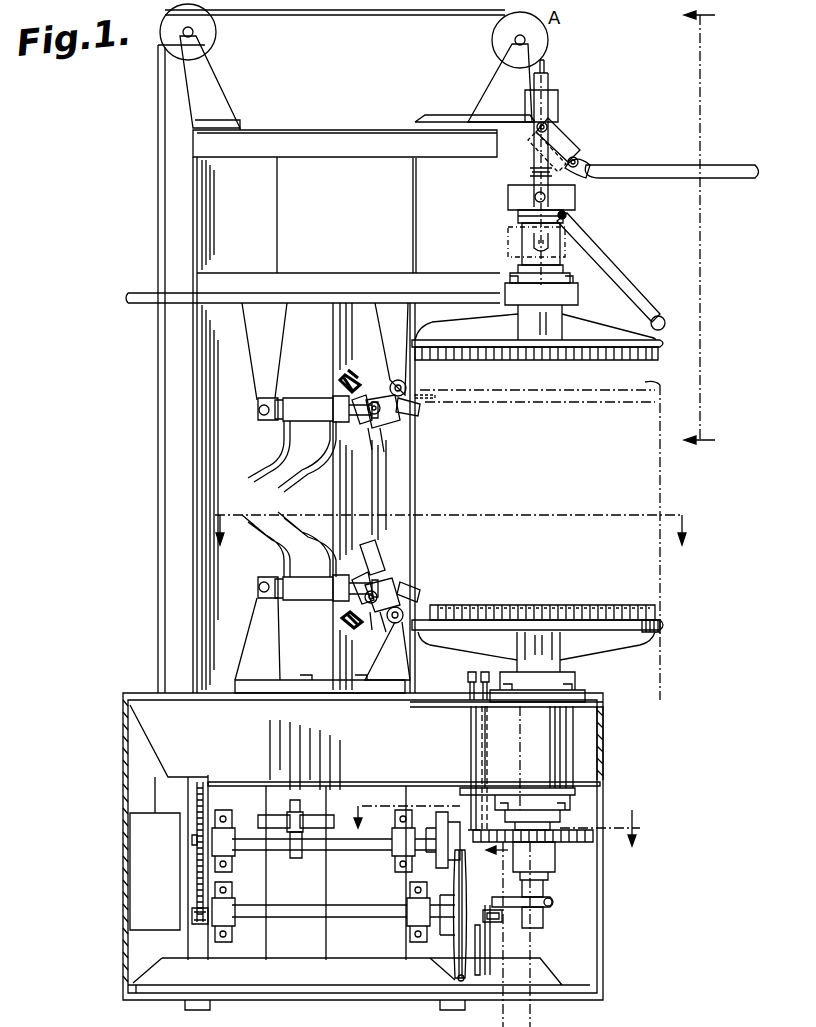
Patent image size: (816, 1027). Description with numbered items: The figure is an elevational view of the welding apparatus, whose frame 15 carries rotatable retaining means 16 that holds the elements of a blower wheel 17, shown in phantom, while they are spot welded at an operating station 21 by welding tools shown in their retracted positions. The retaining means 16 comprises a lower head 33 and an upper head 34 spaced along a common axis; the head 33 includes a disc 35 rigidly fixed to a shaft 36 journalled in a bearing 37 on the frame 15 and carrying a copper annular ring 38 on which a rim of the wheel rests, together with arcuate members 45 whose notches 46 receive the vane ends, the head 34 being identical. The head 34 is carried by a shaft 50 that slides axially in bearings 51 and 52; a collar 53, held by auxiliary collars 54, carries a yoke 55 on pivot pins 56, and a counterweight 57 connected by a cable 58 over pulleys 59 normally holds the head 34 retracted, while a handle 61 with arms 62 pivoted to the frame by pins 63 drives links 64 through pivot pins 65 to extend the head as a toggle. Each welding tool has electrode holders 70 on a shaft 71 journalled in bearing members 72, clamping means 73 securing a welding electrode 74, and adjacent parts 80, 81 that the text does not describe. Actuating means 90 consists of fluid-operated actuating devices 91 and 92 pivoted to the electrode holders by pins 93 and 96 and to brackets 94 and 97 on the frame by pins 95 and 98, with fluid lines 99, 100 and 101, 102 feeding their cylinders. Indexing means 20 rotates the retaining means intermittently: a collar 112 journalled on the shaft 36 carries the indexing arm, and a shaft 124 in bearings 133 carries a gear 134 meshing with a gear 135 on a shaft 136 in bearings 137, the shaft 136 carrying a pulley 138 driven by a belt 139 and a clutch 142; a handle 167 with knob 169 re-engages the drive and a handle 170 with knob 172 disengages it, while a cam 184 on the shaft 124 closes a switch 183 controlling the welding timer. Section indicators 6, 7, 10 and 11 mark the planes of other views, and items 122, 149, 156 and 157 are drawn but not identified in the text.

The section line 6- 6 is at (444, 515).
The section line 7- 7 is at (708, 227).
The section line 10- 10 is at (499, 814).
The section line 11- 11 is at (510, 866).
The frame 15 is at (314, 168).
The retaining means 16 is at (666, 349).
The blower wheel 17 is at (664, 480).
The indexing means 20 is at (572, 826).
The operating station 21 is at (428, 424).
The head 33 is at (620, 652).
The head 34 is at (624, 324).
The disc 35 is at (664, 334).
The shaft 36 is at (556, 742).
The bearing 37 is at (578, 766).
The annular ring 38 is at (667, 355).
The arcuate members 45 is at (622, 614).
The notches 46 is at (600, 608).
The shaft 50 is at (556, 122).
The bearing 51 is at (570, 272).
The bearing 52 is at (570, 166).
The collar 53 is at (578, 196).
The auxiliary collars 54 is at (570, 218).
The yoke 55 is at (566, 152).
The pivot pins 56 is at (532, 204).
The counterweight 57 is at (135, 878).
The cable 58 is at (160, 412).
The pulleys 59 is at (216, 35).
The handle 61 is at (702, 172).
The arms 62 is at (640, 168).
The pivot pins 63 is at (562, 135).
The links 64 is at (548, 166).
The pivot pins 65 is at (582, 168).
The electrode holders 70 is at (385, 428).
The shaft 71 is at (398, 380).
The bearing members 72 is at (405, 315).
The clamping means 73 is at (386, 440).
The welding electrode 74 is at (414, 415).
The gripper finger 80 is at (362, 440).
The finger holder 81 is at (364, 448).
The actuating means 90 is at (290, 546).
The actuating devices 91 is at (303, 603).
The actuating devices 92 is at (310, 398).
The pins 93 is at (388, 585).
The bracket 94 is at (270, 655).
The pins 95 is at (255, 590).
The pins 96 is at (420, 398).
The bracket 97 is at (260, 372).
The pins 98 is at (257, 410).
The fluid line 99 is at (264, 537).
The fluid line 100 is at (325, 555).
The fluid line 101 is at (260, 470).
The fluid line 102 is at (330, 438).
The collar 112 is at (546, 856).
The bearing support 122 is at (438, 818).
The shaft 124 is at (352, 850).
The bearings 133 is at (236, 850).
The gear 134 is at (204, 792).
The gear 135 is at (200, 916).
The shaft 136 is at (288, 920).
The bearings 137 is at (228, 916).
The pulley 138 is at (458, 975).
The belt 139 is at (452, 980).
The clutch 142 is at (470, 905).
The belt 149 is at (488, 948).
The switch 156 is at (510, 900).
The arm 157 is at (542, 908).
The handle 167 is at (474, 728).
The knob 169 is at (474, 672).
The handle 170 is at (480, 762).
The knob 172 is at (490, 672).
The switch 183 is at (305, 824).
The cam 184 is at (298, 852).